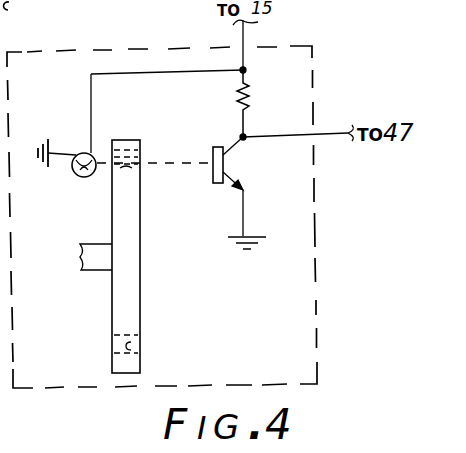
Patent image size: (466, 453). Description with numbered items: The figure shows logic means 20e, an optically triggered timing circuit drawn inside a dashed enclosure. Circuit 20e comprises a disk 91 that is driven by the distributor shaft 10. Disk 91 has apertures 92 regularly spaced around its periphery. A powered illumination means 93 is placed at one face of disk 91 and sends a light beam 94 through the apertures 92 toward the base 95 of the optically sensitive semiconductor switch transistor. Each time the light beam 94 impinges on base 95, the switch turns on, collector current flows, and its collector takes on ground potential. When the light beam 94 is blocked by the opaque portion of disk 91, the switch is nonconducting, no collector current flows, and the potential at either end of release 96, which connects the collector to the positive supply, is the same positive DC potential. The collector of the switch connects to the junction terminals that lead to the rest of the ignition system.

The distributor shaft 10 is at (106, 264).
The disk 91 is at (141, 291).
The apertures 92 is at (140, 170).
The powered illumination means 93 is at (82, 177).
The light beam 94 is at (182, 160).
The base 95 is at (216, 147).
The release 96 is at (248, 97).
The logic means 20e is at (317, 310).